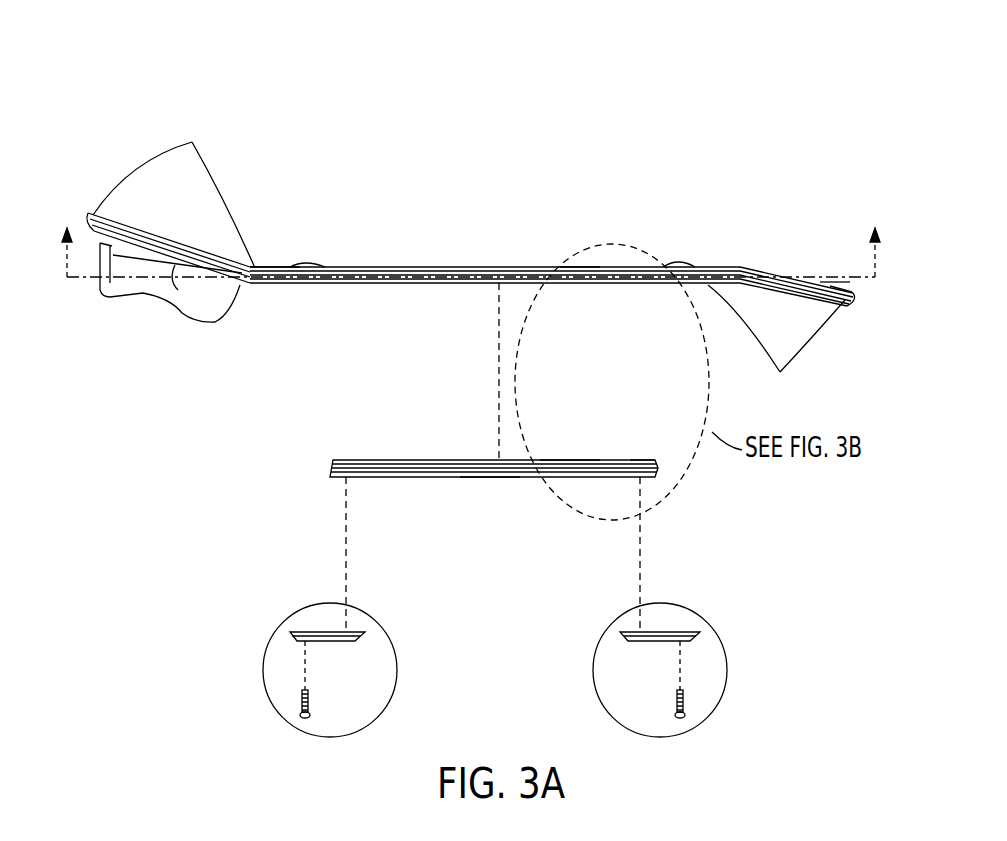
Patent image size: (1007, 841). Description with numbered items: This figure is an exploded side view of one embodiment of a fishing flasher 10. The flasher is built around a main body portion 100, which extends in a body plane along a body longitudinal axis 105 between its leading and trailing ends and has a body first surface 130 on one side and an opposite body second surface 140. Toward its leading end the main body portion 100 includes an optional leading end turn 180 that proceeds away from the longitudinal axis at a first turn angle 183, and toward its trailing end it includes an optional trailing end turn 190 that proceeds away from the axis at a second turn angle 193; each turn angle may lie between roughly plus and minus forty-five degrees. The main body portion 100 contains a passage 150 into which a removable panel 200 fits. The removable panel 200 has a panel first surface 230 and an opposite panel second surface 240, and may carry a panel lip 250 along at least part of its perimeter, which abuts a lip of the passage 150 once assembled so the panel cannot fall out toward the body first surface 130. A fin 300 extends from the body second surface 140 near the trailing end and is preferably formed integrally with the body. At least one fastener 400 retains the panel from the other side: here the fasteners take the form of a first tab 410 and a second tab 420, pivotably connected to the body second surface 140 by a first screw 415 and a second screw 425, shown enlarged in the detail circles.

The fishing flasher 10 is at (598, 103).
The main body portion 100 is at (284, 267).
The body longitudinal axis 105 is at (838, 274).
The body first surface 130 is at (637, 266).
The body second surface 140 is at (271, 285).
The passage 150 is at (577, 267).
The leading end turn 180 is at (776, 347).
The first turn angle 183 is at (830, 284).
The trailing end turn 190 is at (171, 194).
The second turn angle 193 is at (175, 267).
The removable panel 200 is at (410, 458).
The panel first surface 230 is at (558, 462).
The panel second surface 240 is at (490, 480).
The panel lip 250 is at (658, 468).
The fin 300 is at (132, 294).
The fastener 400 is at (263, 668).
The first tab 410 is at (690, 640).
The first screw 415 is at (687, 700).
The second tab 420 is at (290, 637).
The second screw 425 is at (300, 698).